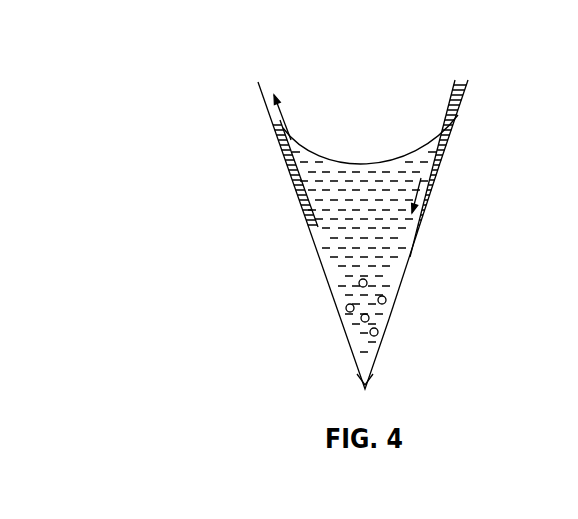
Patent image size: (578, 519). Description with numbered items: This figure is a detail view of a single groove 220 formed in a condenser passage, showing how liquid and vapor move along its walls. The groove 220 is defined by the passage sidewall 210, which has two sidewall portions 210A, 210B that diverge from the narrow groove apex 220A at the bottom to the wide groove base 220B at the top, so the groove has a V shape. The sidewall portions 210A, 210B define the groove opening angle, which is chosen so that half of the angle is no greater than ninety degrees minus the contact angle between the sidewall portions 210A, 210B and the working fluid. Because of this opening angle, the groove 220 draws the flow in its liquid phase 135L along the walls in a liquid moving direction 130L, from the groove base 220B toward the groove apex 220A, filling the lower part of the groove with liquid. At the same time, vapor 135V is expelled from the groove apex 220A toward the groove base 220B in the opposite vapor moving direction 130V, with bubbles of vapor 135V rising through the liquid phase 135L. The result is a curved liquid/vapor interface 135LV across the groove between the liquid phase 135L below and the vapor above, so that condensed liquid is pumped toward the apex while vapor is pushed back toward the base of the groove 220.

The groove 220 is at (270, 30).
The groove apex 220A is at (358, 390).
The groove base 220B is at (470, 83).
The sidewall 210 is at (436, 182).
The sidewall portion 210A is at (410, 257).
The sidewall portion 210B is at (306, 228).
The vapor moving direction 130V is at (288, 157).
The liquid moving direction 130L is at (440, 148).
The liquid/vapor interface 135LV is at (352, 163).
The liquid phase 135L is at (382, 273).
The vapor 135V is at (352, 283).